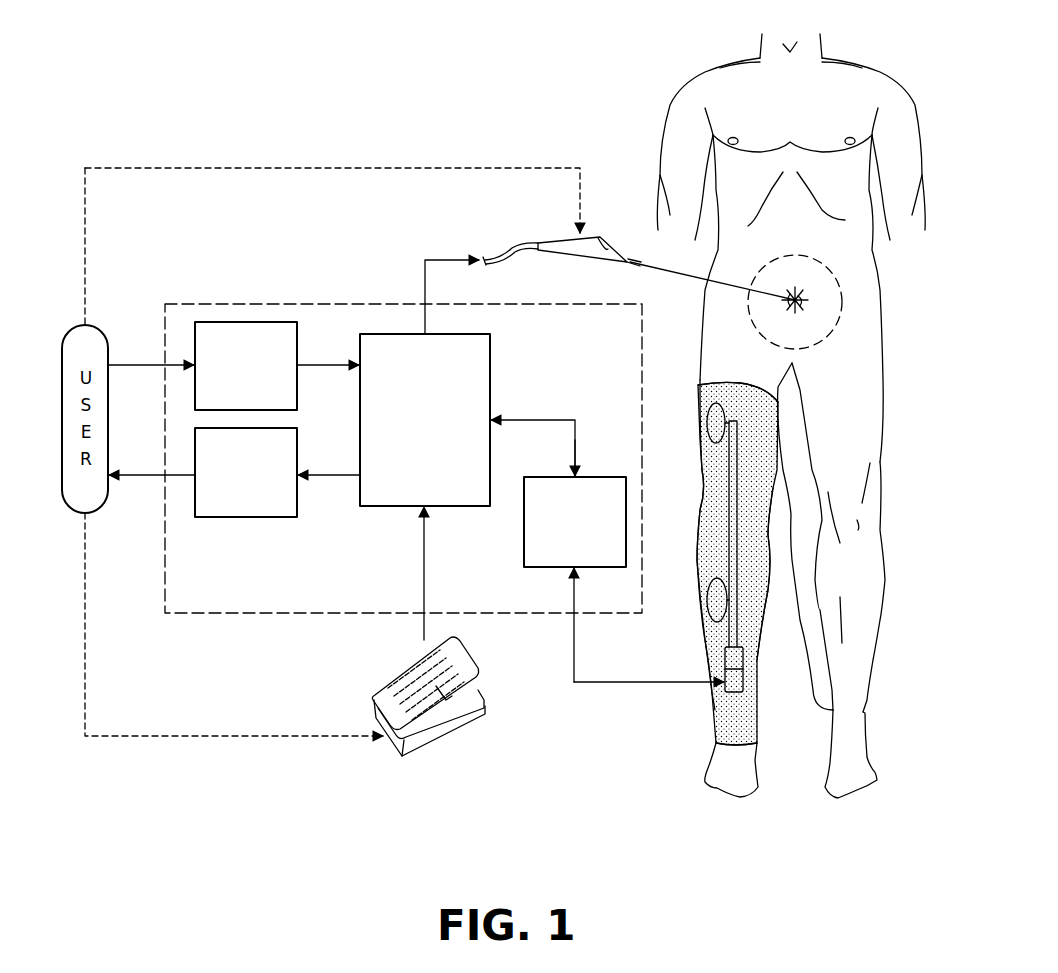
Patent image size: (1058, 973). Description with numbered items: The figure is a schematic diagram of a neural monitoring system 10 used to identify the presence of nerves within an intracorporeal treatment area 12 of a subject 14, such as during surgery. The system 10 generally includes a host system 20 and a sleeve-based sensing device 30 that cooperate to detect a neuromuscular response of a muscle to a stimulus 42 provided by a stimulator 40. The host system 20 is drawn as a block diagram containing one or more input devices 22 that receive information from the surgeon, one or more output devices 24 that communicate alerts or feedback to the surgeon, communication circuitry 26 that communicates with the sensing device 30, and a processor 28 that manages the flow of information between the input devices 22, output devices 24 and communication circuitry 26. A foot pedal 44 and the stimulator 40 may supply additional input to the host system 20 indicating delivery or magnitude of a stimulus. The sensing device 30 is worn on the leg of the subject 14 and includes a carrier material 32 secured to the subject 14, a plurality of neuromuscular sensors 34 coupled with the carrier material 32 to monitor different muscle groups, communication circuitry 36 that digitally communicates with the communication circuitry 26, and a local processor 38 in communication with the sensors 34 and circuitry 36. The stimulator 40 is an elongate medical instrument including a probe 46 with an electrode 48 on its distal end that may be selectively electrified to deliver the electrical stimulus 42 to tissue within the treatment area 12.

The neural monitoring system 10 is at (320, 96).
The intracorporeal treatment area 12 is at (842, 301).
The subject 14 is at (880, 70).
The host system 20 is at (376, 300).
The input devices 22 is at (246, 366).
The output devices 24 is at (246, 472).
The communication circuitry 26 is at (575, 522).
The processor 28 is at (425, 420).
The sensing device 30 is at (727, 731).
The carrier material 32 is at (745, 673).
The neuromuscular sensors 34 is at (706, 422).
The communication circuitry 36 is at (743, 688).
The local processor 38 is at (747, 660).
The stimulator 40 is at (556, 236).
The stimulus 42 is at (800, 312).
The foot pedal 44 is at (442, 745).
The probe 46 is at (692, 280).
The electrode 48 is at (795, 287).